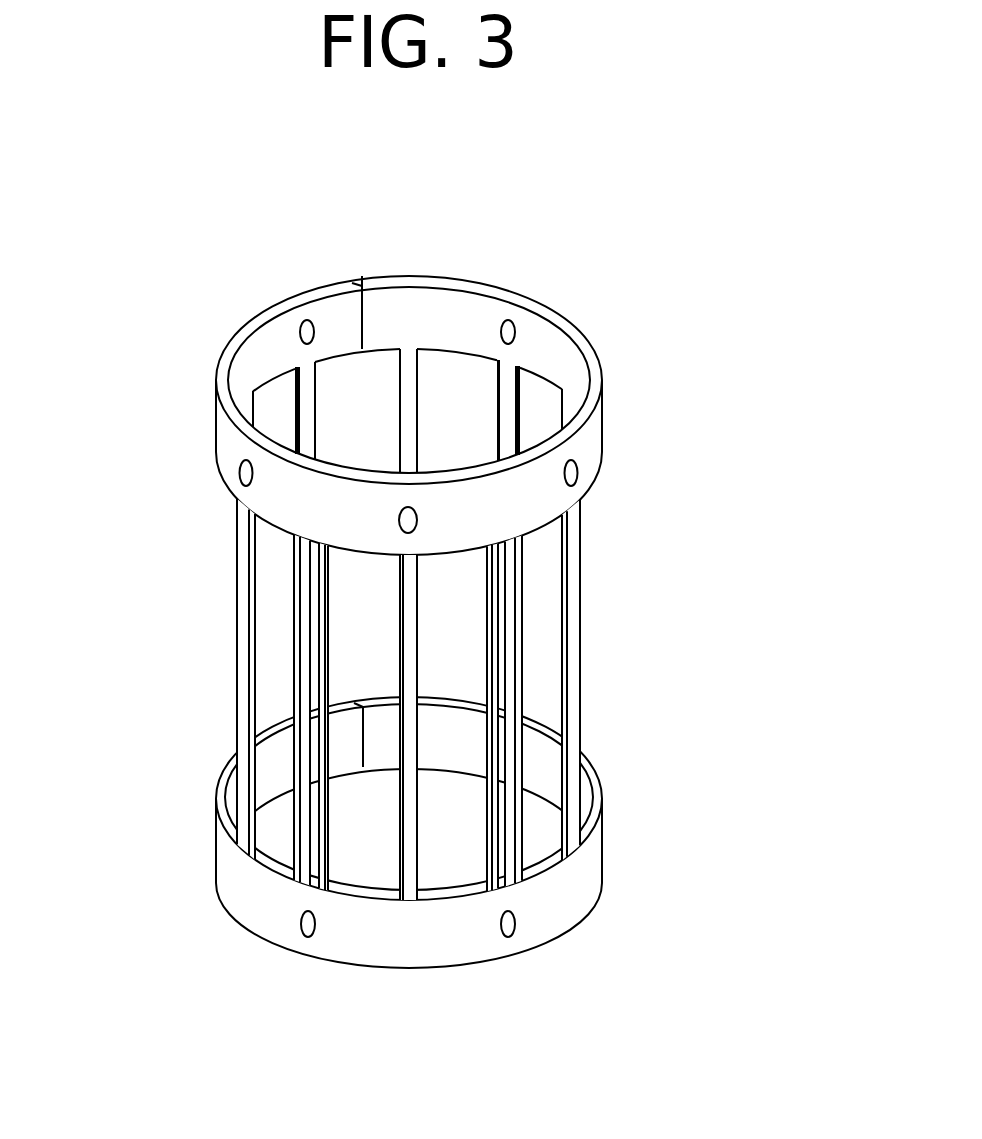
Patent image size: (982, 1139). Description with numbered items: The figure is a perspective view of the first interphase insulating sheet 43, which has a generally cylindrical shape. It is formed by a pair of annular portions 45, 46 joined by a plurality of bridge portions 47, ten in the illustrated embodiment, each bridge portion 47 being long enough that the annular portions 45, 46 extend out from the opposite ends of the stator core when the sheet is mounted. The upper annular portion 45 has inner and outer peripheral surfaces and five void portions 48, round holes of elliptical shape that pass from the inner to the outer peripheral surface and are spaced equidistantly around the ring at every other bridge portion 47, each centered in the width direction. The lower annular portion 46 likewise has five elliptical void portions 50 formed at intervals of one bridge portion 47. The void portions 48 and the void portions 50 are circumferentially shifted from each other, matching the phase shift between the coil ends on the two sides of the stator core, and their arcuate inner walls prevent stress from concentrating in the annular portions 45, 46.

The first interphase insulating sheet 43 is at (419, 248).
The annular portion 45 is at (594, 343).
The annular portion 46 is at (604, 846).
The bridge portion 47 is at (418, 398).
The void portion 48 is at (307, 319).
The void portion 50 is at (406, 746).